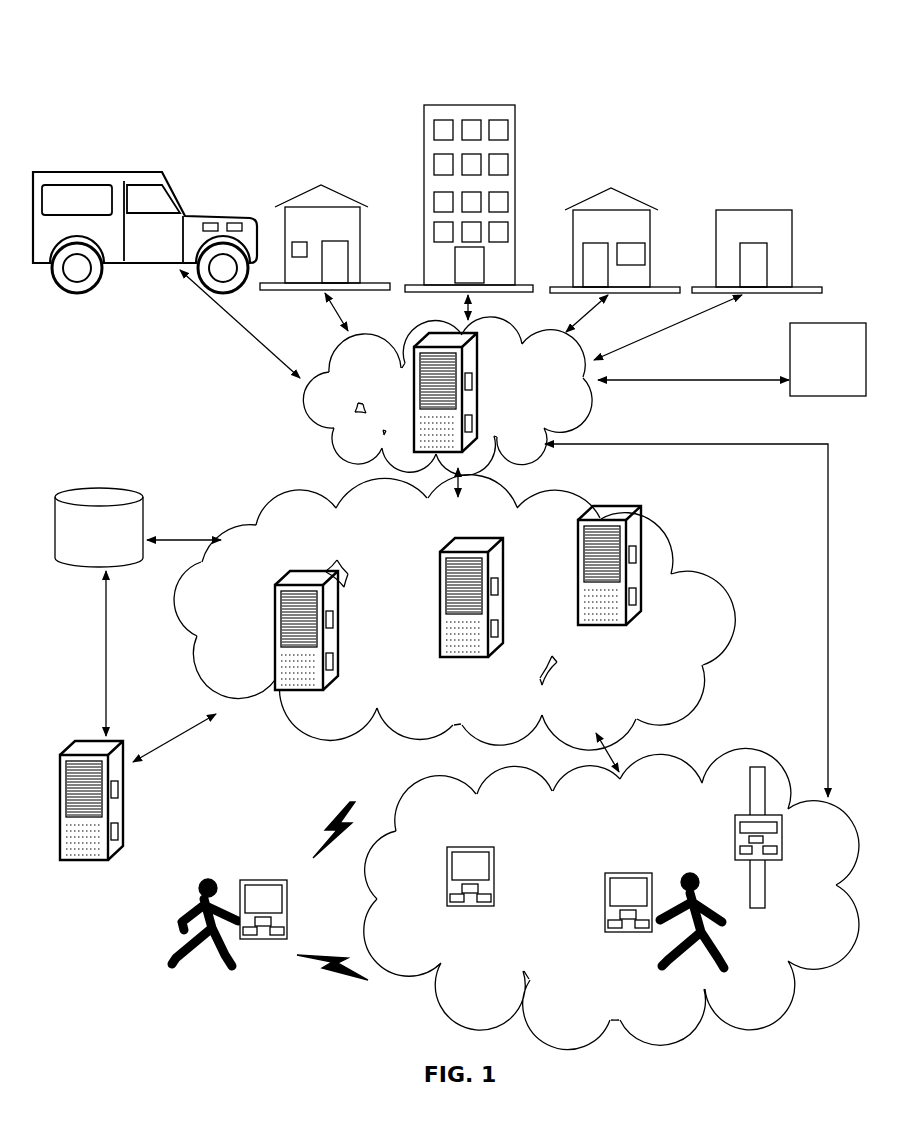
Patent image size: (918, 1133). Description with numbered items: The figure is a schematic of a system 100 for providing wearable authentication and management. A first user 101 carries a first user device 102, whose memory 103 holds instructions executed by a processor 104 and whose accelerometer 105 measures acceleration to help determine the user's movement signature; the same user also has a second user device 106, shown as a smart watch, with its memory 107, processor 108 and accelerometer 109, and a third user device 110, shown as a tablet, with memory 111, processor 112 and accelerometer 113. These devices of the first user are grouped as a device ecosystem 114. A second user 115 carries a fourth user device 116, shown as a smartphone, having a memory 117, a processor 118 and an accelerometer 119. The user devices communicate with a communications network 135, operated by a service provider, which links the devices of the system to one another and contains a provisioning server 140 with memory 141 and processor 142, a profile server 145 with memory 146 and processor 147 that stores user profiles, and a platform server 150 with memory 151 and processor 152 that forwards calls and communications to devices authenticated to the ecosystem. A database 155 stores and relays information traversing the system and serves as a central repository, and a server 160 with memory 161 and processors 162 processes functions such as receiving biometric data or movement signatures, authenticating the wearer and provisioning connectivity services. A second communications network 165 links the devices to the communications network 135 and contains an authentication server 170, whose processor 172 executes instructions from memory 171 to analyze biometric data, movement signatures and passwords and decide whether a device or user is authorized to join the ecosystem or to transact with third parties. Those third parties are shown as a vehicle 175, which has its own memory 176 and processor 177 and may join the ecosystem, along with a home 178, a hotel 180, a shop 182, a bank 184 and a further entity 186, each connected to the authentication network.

The system 100 is at (178, 92).
The first user 101 is at (719, 970).
The first user device 102 is at (605, 913).
The memory 103 is at (612, 933).
The processor 104 is at (641, 933).
The accelerometer 105 is at (628, 920).
The second user device 106 is at (735, 829).
The memory 107 is at (745, 855).
The processor 108 is at (775, 855).
The accelerometer 109 is at (763, 839).
The third user device 110 is at (494, 860).
The memory 111 is at (453, 907).
The processor 112 is at (487, 907).
The accelerometer 113 is at (470, 894).
The device ecosystem 114 is at (440, 1013).
The second user 115 is at (222, 970).
The fourth user device 116 is at (287, 912).
The memory 117 is at (249, 936).
The processor 118 is at (273, 936).
The accelerometer 119 is at (262, 927).
The communications network 135 is at (730, 606).
The server 140 is at (275, 605).
The memory 141 is at (334, 620).
The processor 142 is at (334, 662).
The server 145 is at (440, 575).
The memory 146 is at (499, 587).
The processor 147 is at (499, 629).
The server 150 is at (595, 510).
The memory 151 is at (637, 555).
The processor 152 is at (637, 597).
The database 155 is at (99, 527).
The server 160 is at (88, 860).
The memory 161 is at (119, 832).
The processors 162 is at (119, 790).
The communications network 165 is at (590, 411).
The server 170 is at (412, 390).
The memory 171 is at (473, 382).
The processor 172 is at (473, 424).
The vehicle 175 is at (63, 172).
The memory 176 is at (210, 222).
The processor 177 is at (235, 222).
The home 178 is at (321, 185).
The hotel 180 is at (515, 168).
The shop 182 is at (611, 188).
The bank 184 is at (757, 210).
The entity 186 is at (828, 359).